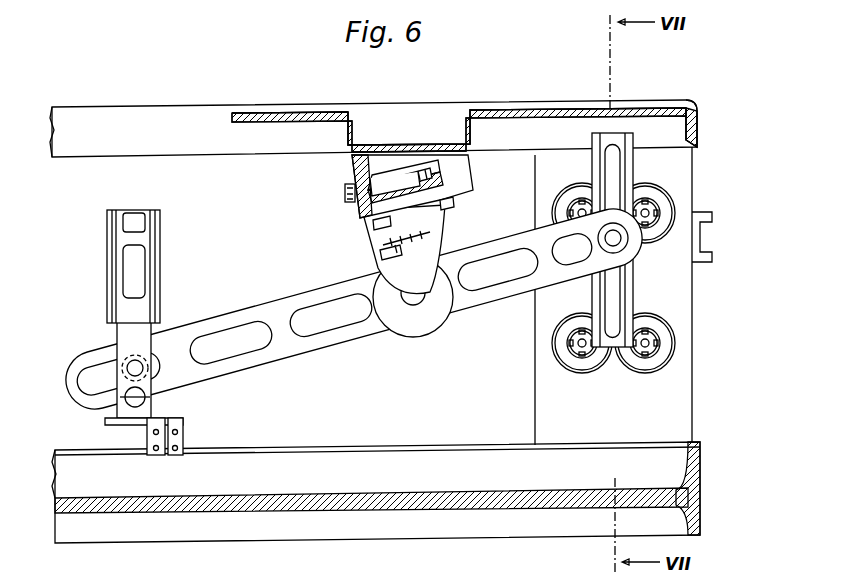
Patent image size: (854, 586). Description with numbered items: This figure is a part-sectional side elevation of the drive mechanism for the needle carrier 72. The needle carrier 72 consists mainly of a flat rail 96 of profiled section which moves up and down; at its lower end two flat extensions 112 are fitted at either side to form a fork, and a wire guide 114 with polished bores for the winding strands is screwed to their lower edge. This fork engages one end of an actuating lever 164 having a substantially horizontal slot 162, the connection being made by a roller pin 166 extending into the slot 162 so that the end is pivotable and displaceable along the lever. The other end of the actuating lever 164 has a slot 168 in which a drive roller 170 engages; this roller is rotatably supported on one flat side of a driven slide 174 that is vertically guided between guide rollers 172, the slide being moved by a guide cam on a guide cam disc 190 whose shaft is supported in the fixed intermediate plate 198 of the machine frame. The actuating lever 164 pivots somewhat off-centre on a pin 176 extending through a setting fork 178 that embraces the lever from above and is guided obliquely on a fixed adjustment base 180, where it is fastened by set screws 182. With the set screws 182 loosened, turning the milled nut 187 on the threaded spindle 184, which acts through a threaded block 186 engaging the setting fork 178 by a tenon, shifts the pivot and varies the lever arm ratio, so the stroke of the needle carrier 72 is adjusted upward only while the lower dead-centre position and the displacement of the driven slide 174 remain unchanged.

The needle carrier 72 is at (134, 266).
The flat rail 96 is at (112, 245).
The flat extensions 112 is at (132, 358).
The wire guide 114 is at (110, 422).
The slot 162 is at (92, 380).
The actuating lever 164 is at (351, 315).
The roller pin 166 is at (141, 374).
The slot 168 is at (566, 254).
The drive roller 170 is at (618, 246).
The guide rollers 172 is at (652, 192).
The driven slide 174 is at (622, 152).
The pin 176 is at (420, 300).
The setting fork 178 is at (380, 278).
The adjustment base 180 is at (391, 199).
The set screws 182 is at (374, 226).
The threaded spindle 184 is at (445, 172).
The threaded block 186 is at (428, 185).
The milled nut 187 is at (344, 195).
The guide cam disc 190 is at (700, 250).
The intermediate plate 198 is at (62, 118).